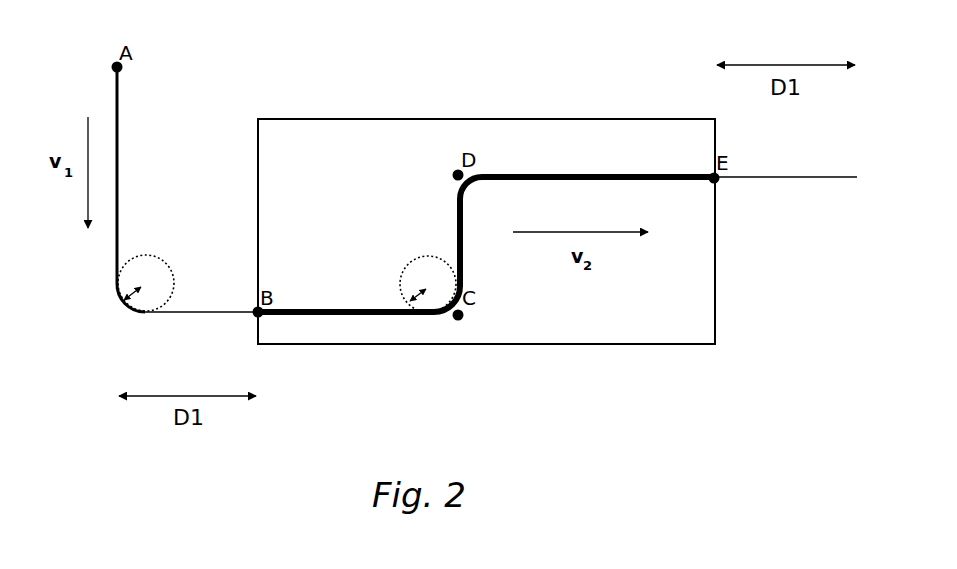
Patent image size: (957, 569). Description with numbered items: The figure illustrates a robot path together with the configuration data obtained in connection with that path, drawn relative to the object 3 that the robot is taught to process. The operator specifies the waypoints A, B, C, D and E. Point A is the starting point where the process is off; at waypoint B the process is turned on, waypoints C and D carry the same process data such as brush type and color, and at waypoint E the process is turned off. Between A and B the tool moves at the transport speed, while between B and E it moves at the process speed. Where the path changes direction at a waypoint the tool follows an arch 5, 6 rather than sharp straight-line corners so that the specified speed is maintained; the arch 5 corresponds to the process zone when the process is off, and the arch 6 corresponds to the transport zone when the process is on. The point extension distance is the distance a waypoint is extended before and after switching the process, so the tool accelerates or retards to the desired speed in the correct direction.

The object 3 is at (673, 305).
The arch 5 is at (122, 300).
The arch 6 is at (442, 317).